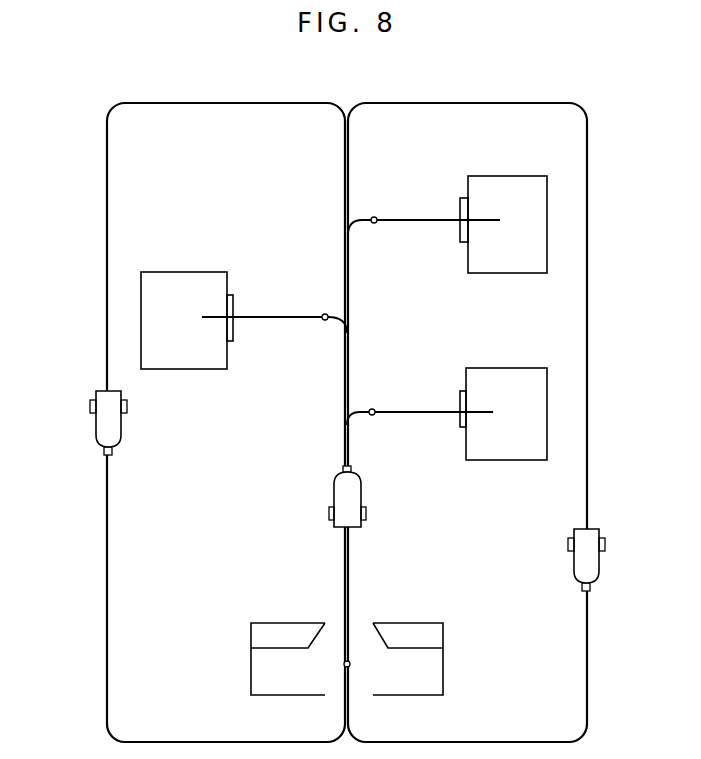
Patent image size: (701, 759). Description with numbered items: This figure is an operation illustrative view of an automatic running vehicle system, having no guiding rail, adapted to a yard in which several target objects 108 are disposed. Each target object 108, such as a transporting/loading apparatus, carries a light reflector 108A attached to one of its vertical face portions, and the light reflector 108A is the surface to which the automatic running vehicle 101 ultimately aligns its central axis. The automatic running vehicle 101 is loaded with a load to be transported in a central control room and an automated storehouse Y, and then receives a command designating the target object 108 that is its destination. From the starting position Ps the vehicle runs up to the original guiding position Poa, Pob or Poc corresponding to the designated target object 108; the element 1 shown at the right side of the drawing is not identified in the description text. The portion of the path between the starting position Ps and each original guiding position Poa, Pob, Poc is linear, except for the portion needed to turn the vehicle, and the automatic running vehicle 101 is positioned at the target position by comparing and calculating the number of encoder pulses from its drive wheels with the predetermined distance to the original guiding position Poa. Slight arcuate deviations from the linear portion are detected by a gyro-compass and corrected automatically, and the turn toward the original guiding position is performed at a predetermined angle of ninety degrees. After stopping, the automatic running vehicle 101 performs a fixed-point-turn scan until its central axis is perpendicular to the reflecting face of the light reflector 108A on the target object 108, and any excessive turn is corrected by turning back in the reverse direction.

The target object 108 is at (160, 272).
The light reflector 108A is at (233, 295).
The automatic running vehicle 101 is at (96, 437).
The connector 1 is at (574, 571).
The automated storehouse Y is at (251, 677).
The original guiding position Poc is at (424, 212).
The original guiding position Pob is at (274, 313).
The original guiding position Poa is at (420, 408).
The starting position Ps is at (349, 661).